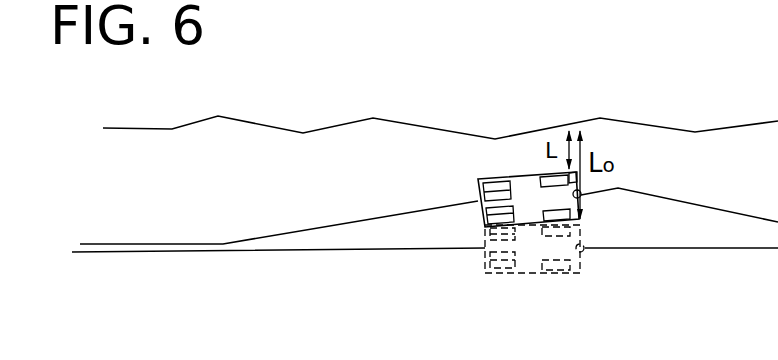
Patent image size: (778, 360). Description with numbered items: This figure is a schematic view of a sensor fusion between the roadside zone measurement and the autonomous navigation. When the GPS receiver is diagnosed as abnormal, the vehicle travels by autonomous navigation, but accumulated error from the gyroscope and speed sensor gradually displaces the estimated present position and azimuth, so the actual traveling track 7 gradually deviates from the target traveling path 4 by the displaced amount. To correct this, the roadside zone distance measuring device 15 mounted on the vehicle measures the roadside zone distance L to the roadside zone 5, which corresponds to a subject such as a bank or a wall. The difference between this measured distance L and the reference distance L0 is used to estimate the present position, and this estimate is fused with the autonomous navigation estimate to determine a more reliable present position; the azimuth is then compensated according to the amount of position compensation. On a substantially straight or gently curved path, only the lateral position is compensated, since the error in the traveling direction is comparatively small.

The target traveling path 4 is at (398, 250).
The roadside zone 5 is at (535, 130).
The actual traveling track 7 is at (388, 217).
The roadside zone distance measuring device 15 is at (580, 179).